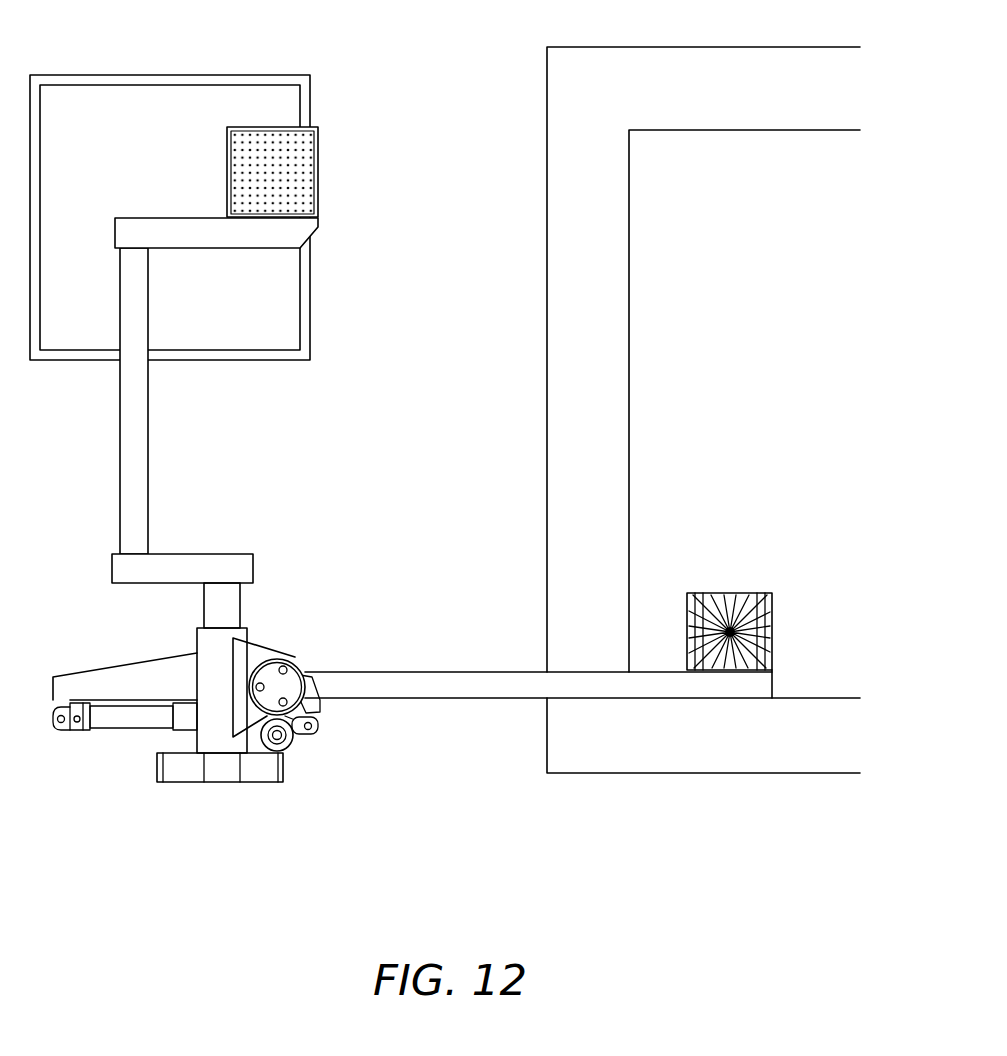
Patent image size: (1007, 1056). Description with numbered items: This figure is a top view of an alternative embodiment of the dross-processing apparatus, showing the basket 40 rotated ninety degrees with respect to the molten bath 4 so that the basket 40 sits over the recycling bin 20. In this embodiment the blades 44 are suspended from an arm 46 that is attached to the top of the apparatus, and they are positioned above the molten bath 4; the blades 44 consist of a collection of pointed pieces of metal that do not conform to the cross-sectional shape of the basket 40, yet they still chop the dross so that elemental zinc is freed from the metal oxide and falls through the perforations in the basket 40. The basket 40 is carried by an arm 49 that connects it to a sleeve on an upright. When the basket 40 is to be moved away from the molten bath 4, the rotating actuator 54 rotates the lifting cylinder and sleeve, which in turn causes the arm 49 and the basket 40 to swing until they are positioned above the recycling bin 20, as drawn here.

The molten bath 4 is at (733, 415).
The recycling bin 20 is at (150, 95).
The basket 40 is at (298, 165).
The blades 44 is at (773, 617).
The arm 46 is at (422, 688).
The arm 49 is at (127, 463).
The rotating actuator 54 is at (125, 720).